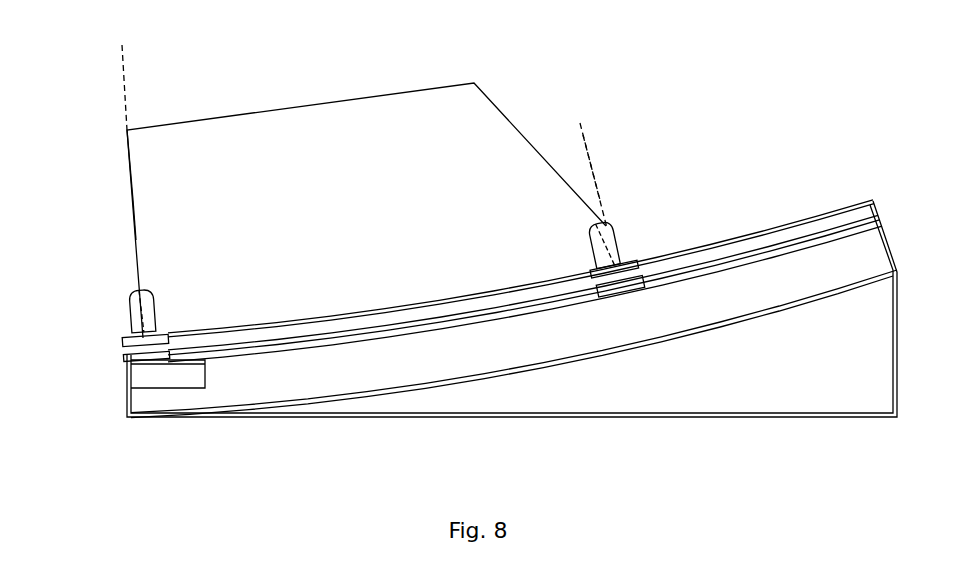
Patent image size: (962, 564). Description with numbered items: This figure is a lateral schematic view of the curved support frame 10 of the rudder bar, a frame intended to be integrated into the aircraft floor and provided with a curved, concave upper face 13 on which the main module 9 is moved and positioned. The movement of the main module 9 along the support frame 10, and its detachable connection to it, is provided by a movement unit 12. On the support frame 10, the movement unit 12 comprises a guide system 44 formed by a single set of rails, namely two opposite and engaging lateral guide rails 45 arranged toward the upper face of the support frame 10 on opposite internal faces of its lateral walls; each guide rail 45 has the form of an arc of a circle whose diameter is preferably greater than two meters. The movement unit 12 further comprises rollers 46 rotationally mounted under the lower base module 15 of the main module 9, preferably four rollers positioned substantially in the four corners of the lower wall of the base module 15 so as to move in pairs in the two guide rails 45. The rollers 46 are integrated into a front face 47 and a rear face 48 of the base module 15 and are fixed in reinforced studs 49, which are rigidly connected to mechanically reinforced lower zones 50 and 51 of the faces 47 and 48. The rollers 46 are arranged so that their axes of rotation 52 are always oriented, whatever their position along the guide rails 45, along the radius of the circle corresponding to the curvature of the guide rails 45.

The main module 9 is at (124, 178).
The support frame 10 is at (820, 182).
The movement unit 12 is at (106, 363).
The curved upper face 13 is at (773, 226).
The lower base module 15 is at (322, 102).
The guide system 44 is at (418, 341).
The lateral guide rails 45 is at (690, 260).
The rollers 46 is at (120, 347).
The front face 47 is at (124, 218).
The rear face 48 is at (587, 117).
The reinforced studs 49 is at (132, 322).
The mechanically reinforced lower zone 50 is at (134, 290).
The mechanically reinforced lower zone 51 is at (613, 222).
The axes of rotation 52 is at (127, 88).